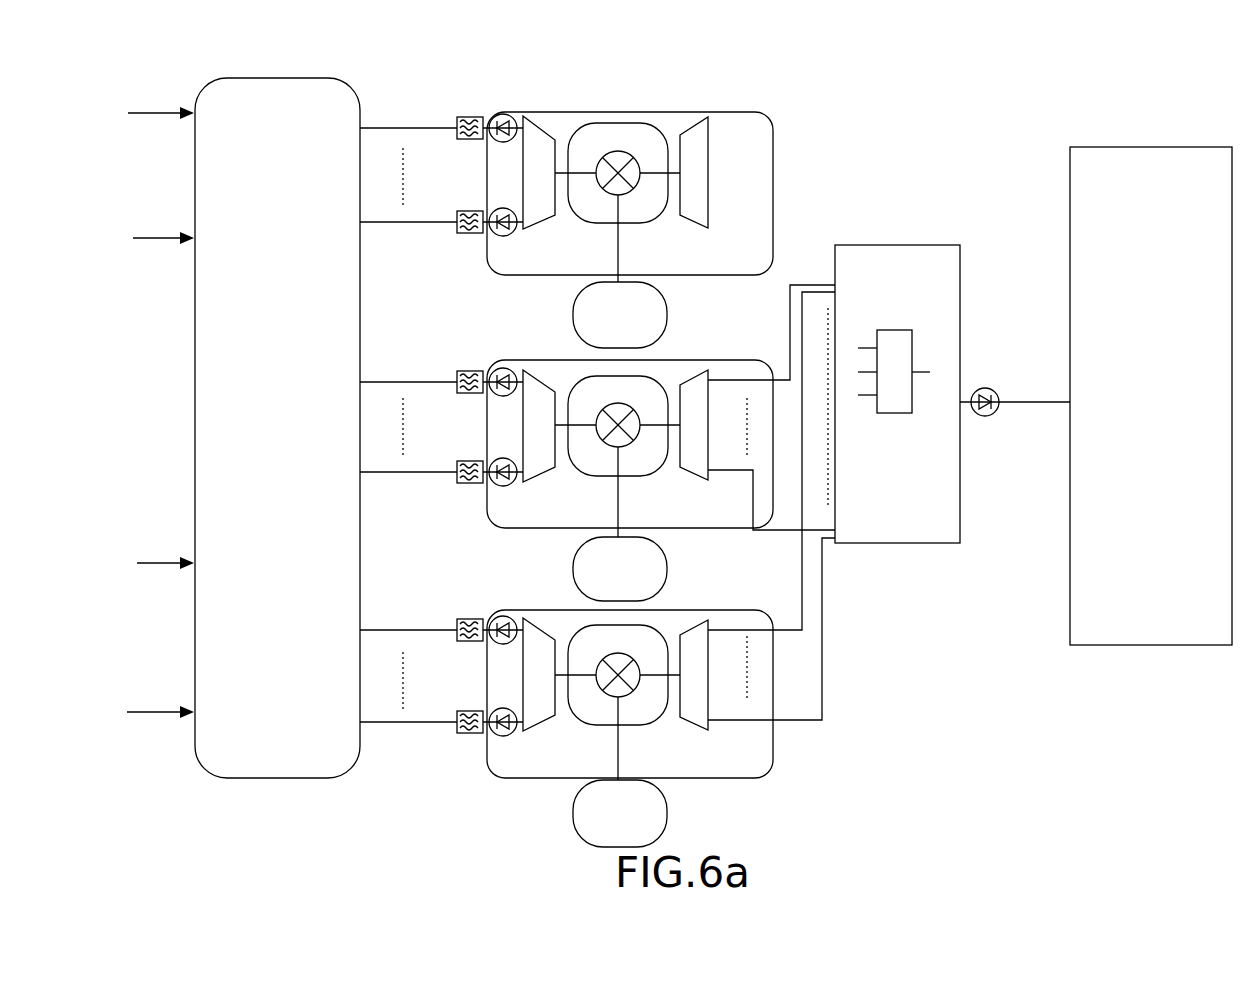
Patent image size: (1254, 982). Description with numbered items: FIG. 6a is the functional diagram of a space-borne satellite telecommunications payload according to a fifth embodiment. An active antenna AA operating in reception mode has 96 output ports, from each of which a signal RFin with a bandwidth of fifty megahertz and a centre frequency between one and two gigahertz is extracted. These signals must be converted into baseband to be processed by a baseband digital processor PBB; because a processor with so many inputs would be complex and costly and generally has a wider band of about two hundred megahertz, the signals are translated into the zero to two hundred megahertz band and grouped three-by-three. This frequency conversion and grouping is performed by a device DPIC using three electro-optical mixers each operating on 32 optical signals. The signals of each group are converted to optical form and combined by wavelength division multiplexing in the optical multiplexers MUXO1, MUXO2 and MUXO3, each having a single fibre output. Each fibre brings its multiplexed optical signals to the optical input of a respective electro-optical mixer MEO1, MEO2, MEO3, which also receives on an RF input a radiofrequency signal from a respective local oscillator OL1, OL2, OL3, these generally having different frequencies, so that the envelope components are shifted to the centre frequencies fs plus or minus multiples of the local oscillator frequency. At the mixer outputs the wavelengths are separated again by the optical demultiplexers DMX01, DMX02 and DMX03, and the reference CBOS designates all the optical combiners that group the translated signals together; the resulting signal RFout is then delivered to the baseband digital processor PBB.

The active antenna AA is at (290, 68).
The output ports 96 is at (277, 428).
The RF input signal RFin is at (416, 94).
The optical signals 32 is at (736, 425).
The first optical multiplexer MUXO1 is at (538, 122).
The first electro-optical mixer MEO1 is at (628, 120).
The first optical demultiplexer DMX01 is at (713, 130).
The first local oscillator OL1 is at (620, 315).
The second optical multiplexer MUXO2 is at (543, 478).
The second electro-optical mixer MEO2 is at (587, 378).
The second optical demultiplexer DMX02 is at (713, 396).
The second local oscillator OL2 is at (620, 569).
The third optical multiplexer MUXO3 is at (543, 724).
The third electro-optical mixer MEO3 is at (598, 625).
The third optical demultiplexer DMX03 is at (713, 642).
The third local oscillator OL3 is at (620, 813).
The optical combiners CBOS is at (869, 224).
The RF output signal RFout is at (1003, 350).
The baseband digital processor PBB is at (1151, 396).
The frequency conversion and grouping device DPIC is at (734, 816).